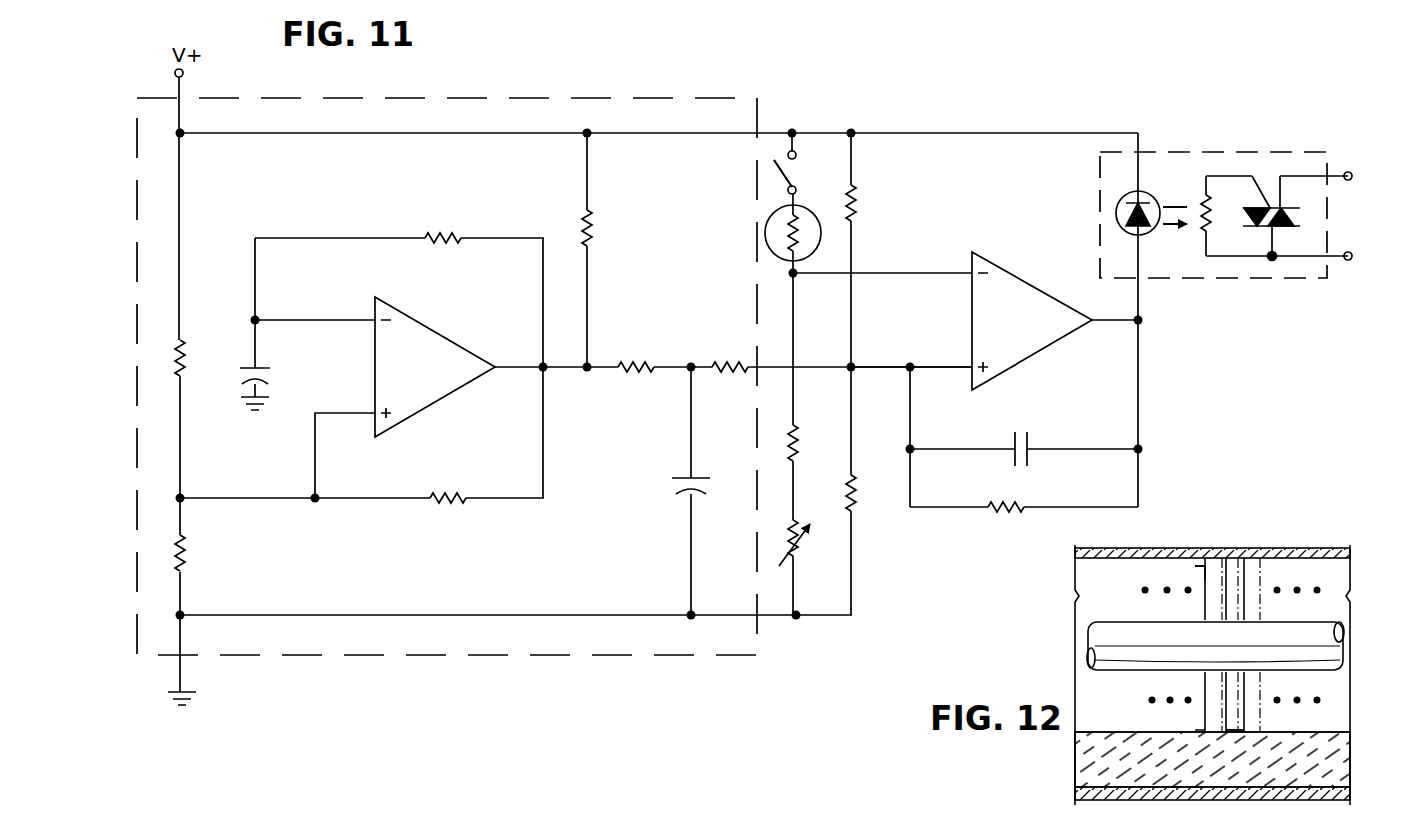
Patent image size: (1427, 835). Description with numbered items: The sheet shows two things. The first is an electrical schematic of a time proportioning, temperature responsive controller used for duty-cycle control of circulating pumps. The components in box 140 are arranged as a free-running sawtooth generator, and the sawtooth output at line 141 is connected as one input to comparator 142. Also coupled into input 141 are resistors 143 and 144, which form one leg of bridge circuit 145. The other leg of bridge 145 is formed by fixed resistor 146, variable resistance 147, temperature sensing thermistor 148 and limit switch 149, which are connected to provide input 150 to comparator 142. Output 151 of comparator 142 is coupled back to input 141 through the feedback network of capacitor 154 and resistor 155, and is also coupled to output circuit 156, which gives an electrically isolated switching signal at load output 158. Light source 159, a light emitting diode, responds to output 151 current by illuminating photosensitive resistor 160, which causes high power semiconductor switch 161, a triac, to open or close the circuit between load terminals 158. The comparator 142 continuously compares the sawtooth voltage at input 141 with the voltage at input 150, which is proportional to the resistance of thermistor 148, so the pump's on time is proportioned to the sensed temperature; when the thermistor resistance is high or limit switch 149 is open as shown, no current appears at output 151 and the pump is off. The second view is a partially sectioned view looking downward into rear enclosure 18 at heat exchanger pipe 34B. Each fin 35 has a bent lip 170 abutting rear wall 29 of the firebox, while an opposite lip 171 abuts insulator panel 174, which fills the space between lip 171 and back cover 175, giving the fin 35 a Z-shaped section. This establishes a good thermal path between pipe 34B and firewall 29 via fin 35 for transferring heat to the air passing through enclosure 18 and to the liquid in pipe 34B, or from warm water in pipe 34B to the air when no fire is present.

In FIG. 11, the box 140 is at (634, 72).
In FIG. 11, the line 141 is at (878, 367).
In FIG. 11, the comparator 142 is at (990, 271).
In FIG. 11, the resistor 143 is at (858, 497).
In FIG. 11, the resistor 144 is at (860, 209).
In FIG. 11, the bridge circuit 145 is at (861, 130).
In FIG. 11, the fixed resistor 146 is at (799, 443).
In FIG. 11, the variable resistance 147 is at (796, 552).
In FIG. 11, the temperature sensing thermistor 148 is at (766, 252).
In FIG. 11, the limit switch 149 is at (780, 178).
In FIG. 11, the input 150 is at (909, 275).
In FIG. 11, the output 151 is at (1116, 322).
In FIG. 11, the capacitor 154 is at (1027, 449).
In FIG. 11, the resistor 155 is at (999, 510).
In FIG. 11, the output circuit 156 is at (1226, 128).
In FIG. 11, the load output 158 is at (1357, 168).
In FIG. 11, the light source 159 is at (1116, 211).
In FIG. 11, the photosensitive resistor 160 is at (1204, 199).
In FIG. 11, the high power semiconductor switch 161 is at (1270, 172).
In FIG. 12, the lip 170 is at (1210, 570).
In FIG. 12, the fin 35 is at (1226, 576).
In FIG. 12, the rear wall 29 is at (1300, 548).
In FIG. 12, the pipe 34B is at (1344, 656).
In FIG. 12, the rear enclosure 18 is at (1338, 724).
In FIG. 12, the lip 171 is at (1232, 729).
In FIG. 12, the insulator panel 174 is at (1346, 780).
In FIG. 12, the back cover 175 is at (1076, 787).